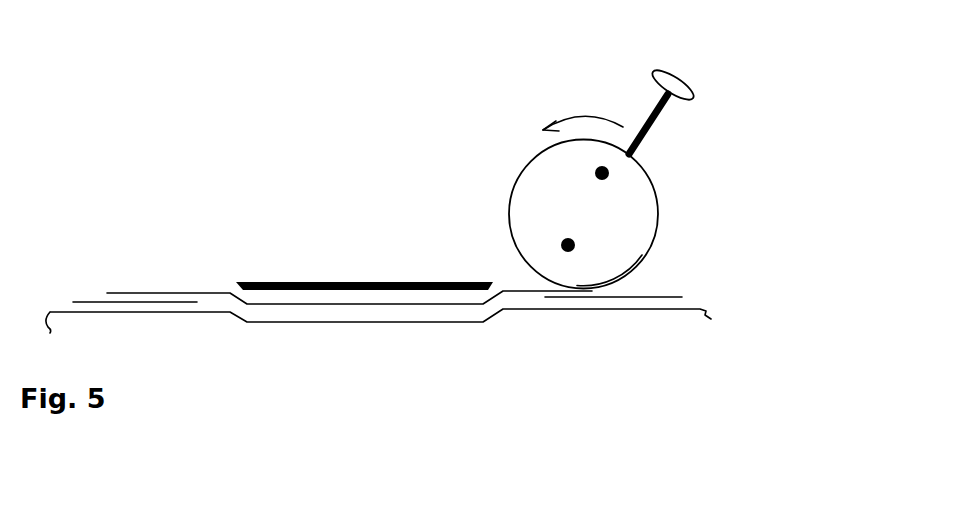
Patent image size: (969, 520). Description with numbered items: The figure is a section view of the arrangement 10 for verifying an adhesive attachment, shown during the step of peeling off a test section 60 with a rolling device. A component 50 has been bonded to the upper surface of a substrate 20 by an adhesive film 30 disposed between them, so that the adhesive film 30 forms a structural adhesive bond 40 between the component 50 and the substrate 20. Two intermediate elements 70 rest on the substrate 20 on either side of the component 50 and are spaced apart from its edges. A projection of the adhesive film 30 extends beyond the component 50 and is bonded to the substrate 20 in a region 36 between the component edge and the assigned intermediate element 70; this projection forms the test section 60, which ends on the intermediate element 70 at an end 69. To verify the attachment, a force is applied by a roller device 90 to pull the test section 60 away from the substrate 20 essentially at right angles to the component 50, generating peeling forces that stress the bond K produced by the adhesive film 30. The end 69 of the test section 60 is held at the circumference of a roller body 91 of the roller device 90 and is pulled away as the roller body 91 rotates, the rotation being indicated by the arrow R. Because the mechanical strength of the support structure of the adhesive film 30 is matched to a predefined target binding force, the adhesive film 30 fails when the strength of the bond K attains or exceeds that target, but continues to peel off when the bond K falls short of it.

The arrangement 10 is at (418, 198).
The substrate 20 is at (698, 305).
The adhesive film 30 is at (178, 293).
The region 36 is at (214, 270).
The structural adhesive bond 40 is at (280, 335).
The component 50 is at (302, 281).
The test section 60 is at (642, 262).
The end 69 is at (640, 247).
The intermediate element 70 is at (93, 301).
The roller device 90 is at (663, 175).
The roller body 91 is at (653, 204).
The bond K is at (388, 328).
The arrow R is at (583, 118).